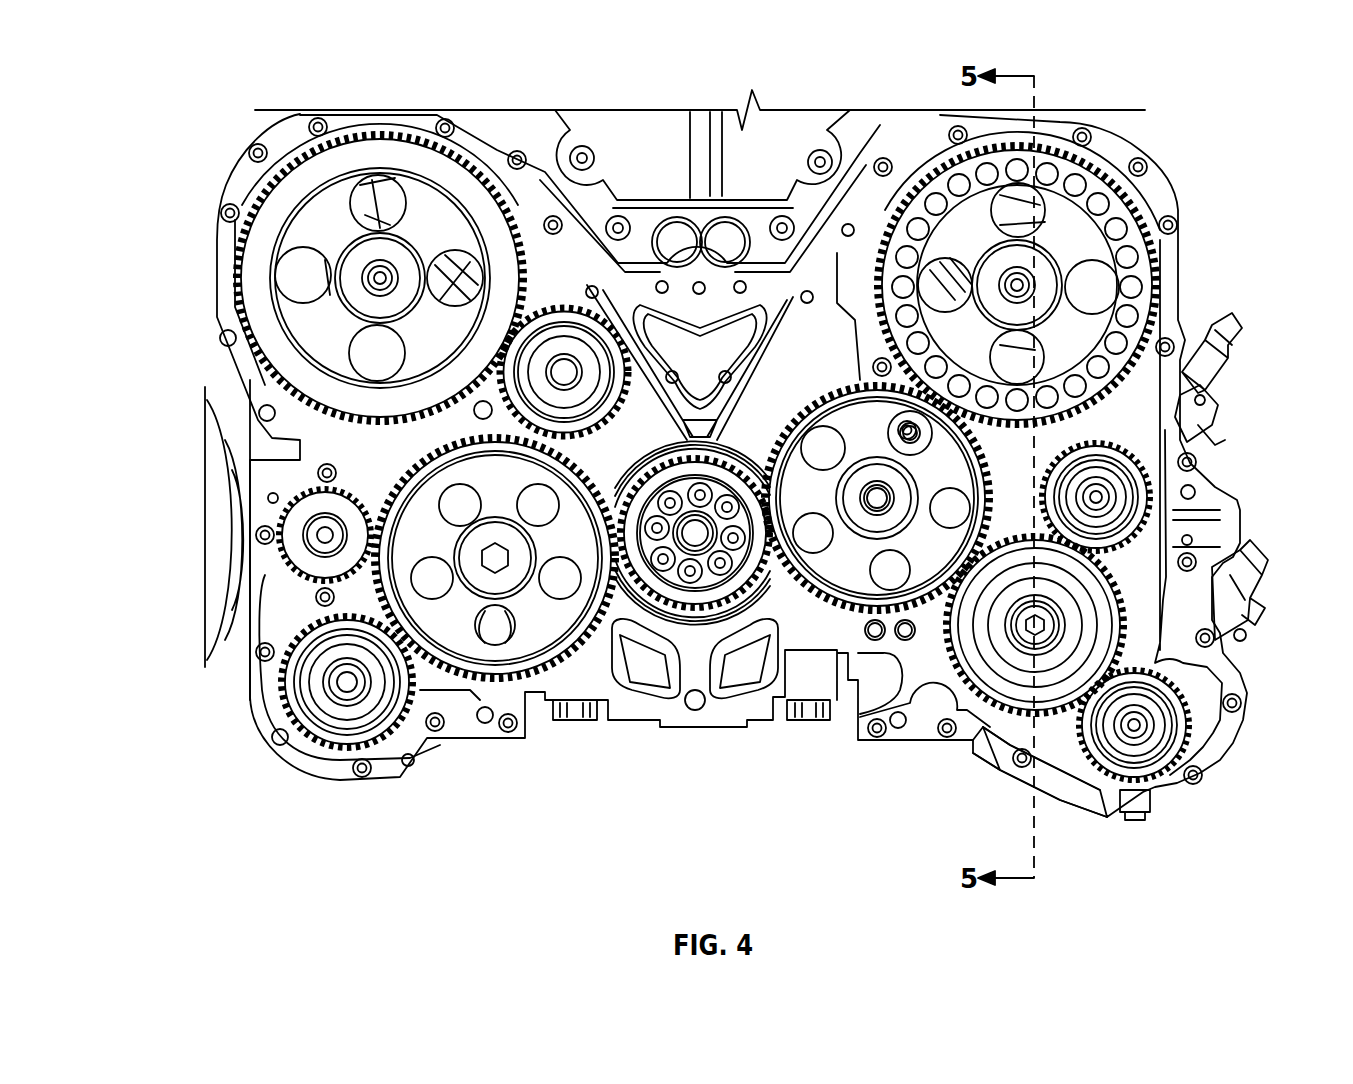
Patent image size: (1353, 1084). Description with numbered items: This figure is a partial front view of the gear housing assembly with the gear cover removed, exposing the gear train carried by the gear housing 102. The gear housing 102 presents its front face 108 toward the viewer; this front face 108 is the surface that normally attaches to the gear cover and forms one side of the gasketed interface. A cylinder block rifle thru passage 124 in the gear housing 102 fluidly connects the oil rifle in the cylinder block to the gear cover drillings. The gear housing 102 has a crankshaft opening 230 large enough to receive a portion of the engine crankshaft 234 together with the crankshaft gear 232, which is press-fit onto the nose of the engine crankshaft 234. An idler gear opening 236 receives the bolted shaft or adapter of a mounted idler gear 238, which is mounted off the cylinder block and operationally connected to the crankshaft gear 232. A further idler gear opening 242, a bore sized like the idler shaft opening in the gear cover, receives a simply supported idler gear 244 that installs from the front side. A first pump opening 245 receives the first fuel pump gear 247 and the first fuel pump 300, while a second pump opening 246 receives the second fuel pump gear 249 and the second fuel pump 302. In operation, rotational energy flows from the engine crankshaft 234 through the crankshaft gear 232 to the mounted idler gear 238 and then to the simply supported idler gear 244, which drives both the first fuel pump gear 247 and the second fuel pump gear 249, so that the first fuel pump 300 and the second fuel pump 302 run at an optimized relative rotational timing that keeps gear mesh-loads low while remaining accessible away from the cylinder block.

The gear housing 102 is at (272, 442).
The front face 108 is at (268, 496).
The cylinder block rifle thru passage 124 is at (701, 282).
The crankshaft opening 230 is at (666, 641).
The crankshaft gear 232 is at (663, 570).
The engine crankshaft 234 is at (722, 585).
The idler gear opening 236 is at (856, 608).
The mounted idler gear 238 is at (877, 737).
The idler gear opening 242 is at (1000, 700).
The simply supported idler gear 244 is at (1030, 742).
The first pump opening 245 is at (1192, 378).
The second pump opening 246 is at (1118, 800).
The first fuel pump gear 247 is at (1130, 497).
The second fuel pump gear 249 is at (1160, 757).
The first fuel pump 300 is at (1142, 472).
The second fuel pump 302 is at (1170, 755).